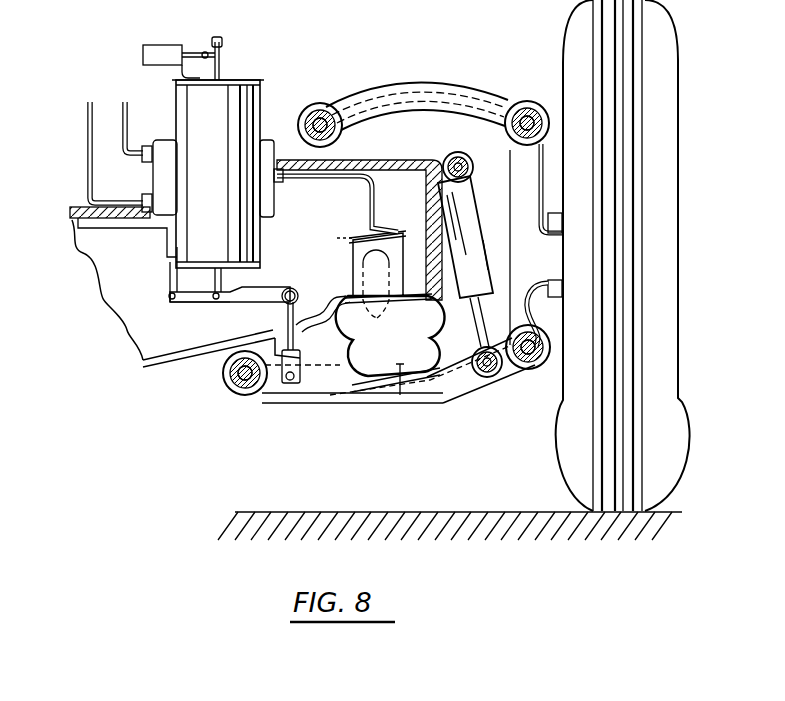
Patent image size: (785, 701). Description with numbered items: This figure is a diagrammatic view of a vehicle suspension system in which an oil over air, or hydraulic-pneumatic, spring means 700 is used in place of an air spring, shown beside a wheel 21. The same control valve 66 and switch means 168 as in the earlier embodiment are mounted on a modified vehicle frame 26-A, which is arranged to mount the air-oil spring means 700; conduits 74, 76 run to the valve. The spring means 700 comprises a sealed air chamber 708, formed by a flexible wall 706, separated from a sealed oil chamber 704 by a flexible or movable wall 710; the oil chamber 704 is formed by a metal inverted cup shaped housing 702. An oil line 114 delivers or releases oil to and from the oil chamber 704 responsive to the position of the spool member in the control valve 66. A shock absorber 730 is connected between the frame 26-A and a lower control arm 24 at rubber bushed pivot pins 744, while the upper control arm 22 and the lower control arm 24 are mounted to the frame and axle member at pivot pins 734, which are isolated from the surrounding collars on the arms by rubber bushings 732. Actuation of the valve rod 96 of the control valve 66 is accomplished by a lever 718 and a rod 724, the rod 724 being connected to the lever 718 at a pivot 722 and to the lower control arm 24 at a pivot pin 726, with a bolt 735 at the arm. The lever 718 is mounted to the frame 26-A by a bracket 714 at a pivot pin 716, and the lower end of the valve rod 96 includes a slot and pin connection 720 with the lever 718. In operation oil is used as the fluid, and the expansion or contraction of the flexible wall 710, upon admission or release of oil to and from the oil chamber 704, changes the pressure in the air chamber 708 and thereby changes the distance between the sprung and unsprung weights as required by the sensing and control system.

The wheel and tire 21 is at (670, 88).
The control arm 22 is at (415, 90).
The lower control arm 24 is at (440, 405).
The vehicle frame 26-A is at (105, 247).
The control valve 66 is at (261, 80).
The conduit 74 is at (123, 105).
The conduit 76 is at (87, 105).
The rod 96 is at (222, 278).
The oil line 114 is at (297, 182).
The switch means 168 is at (162, 48).
The hydraulic-pneumatic spring means 700 is at (349, 235).
The inverted cup shaped housing 702 is at (372, 230).
The oil chamber 704 is at (425, 218).
The flexible wall 706 is at (343, 320).
The air chamber 708 is at (300, 402).
The flexible wall 710 is at (360, 257).
The bracket 714 is at (170, 287).
The pivot pin 716 is at (168, 294).
The lever 718 is at (193, 298).
The slot and pin connection 720 is at (222, 305).
The pivot 722 is at (295, 278).
The rod 724 is at (288, 310).
The pivot pin 726 is at (286, 384).
The shock absorber 730 is at (478, 183).
The rubber bushings 732 is at (318, 93).
The pivot pins 734 is at (315, 112).
The bolt 735 is at (405, 396).
The rubber bushed pivot pins 744 is at (452, 157).